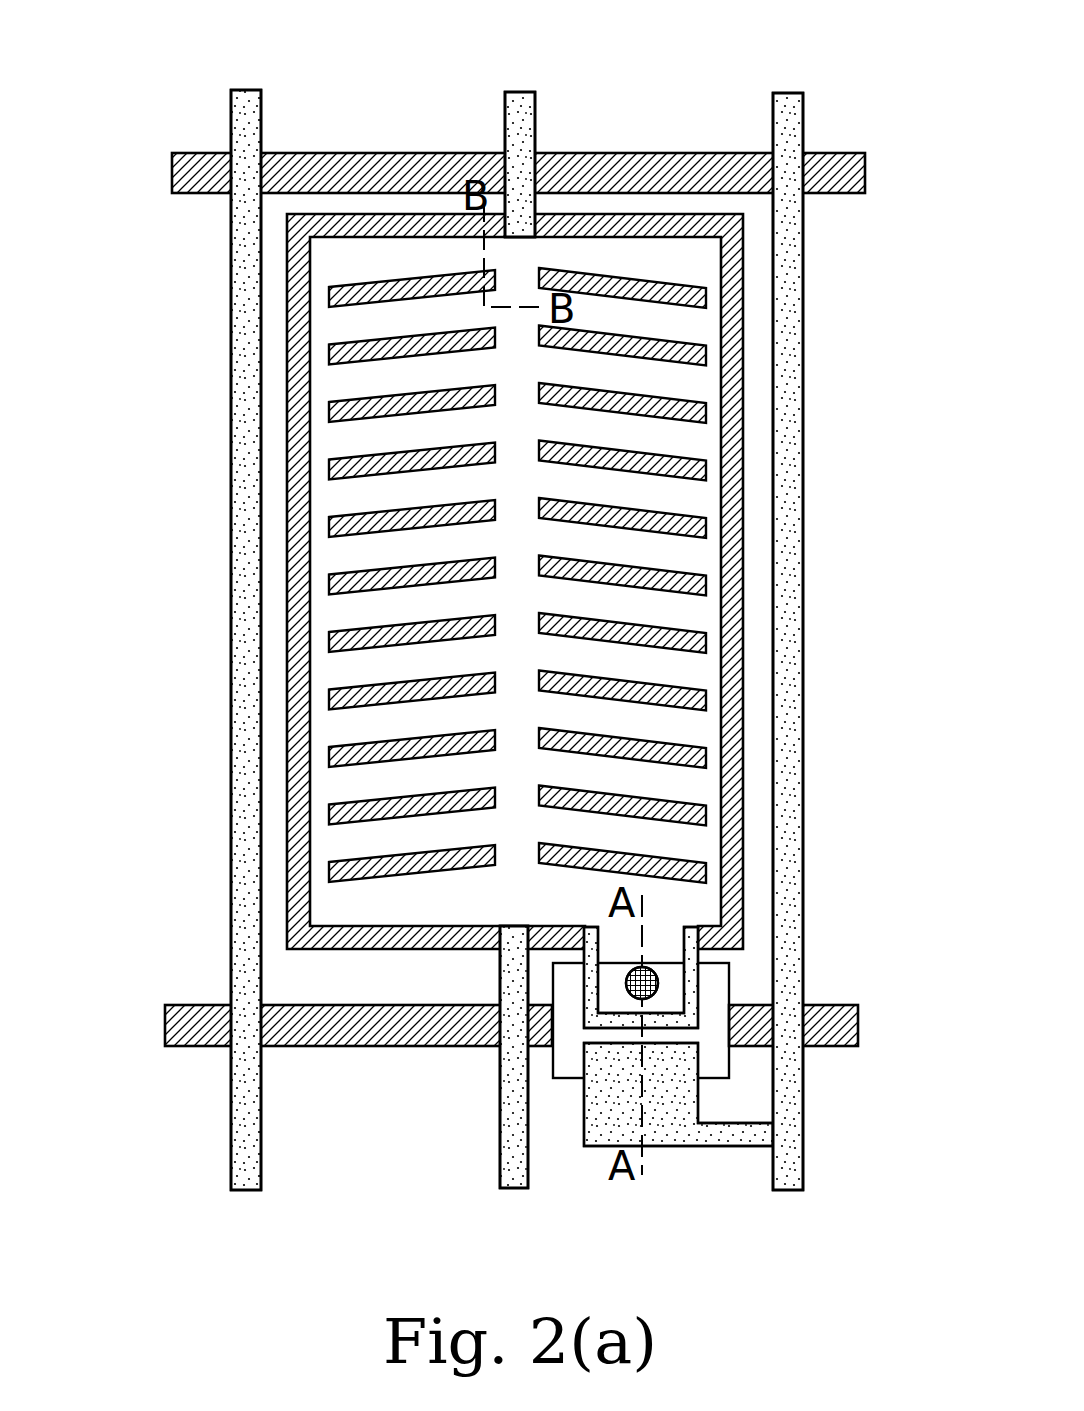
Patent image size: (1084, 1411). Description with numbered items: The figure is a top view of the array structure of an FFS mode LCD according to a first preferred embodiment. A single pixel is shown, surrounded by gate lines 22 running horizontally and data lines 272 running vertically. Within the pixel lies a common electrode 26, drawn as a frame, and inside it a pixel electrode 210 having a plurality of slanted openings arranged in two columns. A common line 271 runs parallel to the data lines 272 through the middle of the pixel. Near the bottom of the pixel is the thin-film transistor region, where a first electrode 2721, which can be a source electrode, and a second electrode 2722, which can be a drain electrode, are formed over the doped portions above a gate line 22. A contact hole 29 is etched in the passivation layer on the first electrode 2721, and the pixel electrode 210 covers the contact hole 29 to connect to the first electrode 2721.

The gate line 22 is at (193, 163).
The common electrode 26 is at (732, 355).
The pixel electrode 210 is at (683, 500).
The common line 271 is at (517, 107).
The data line 272 is at (243, 706).
The contact hole 29 is at (657, 983).
The first electrode 2721 is at (693, 1010).
The second electrode 2722 is at (670, 1125).